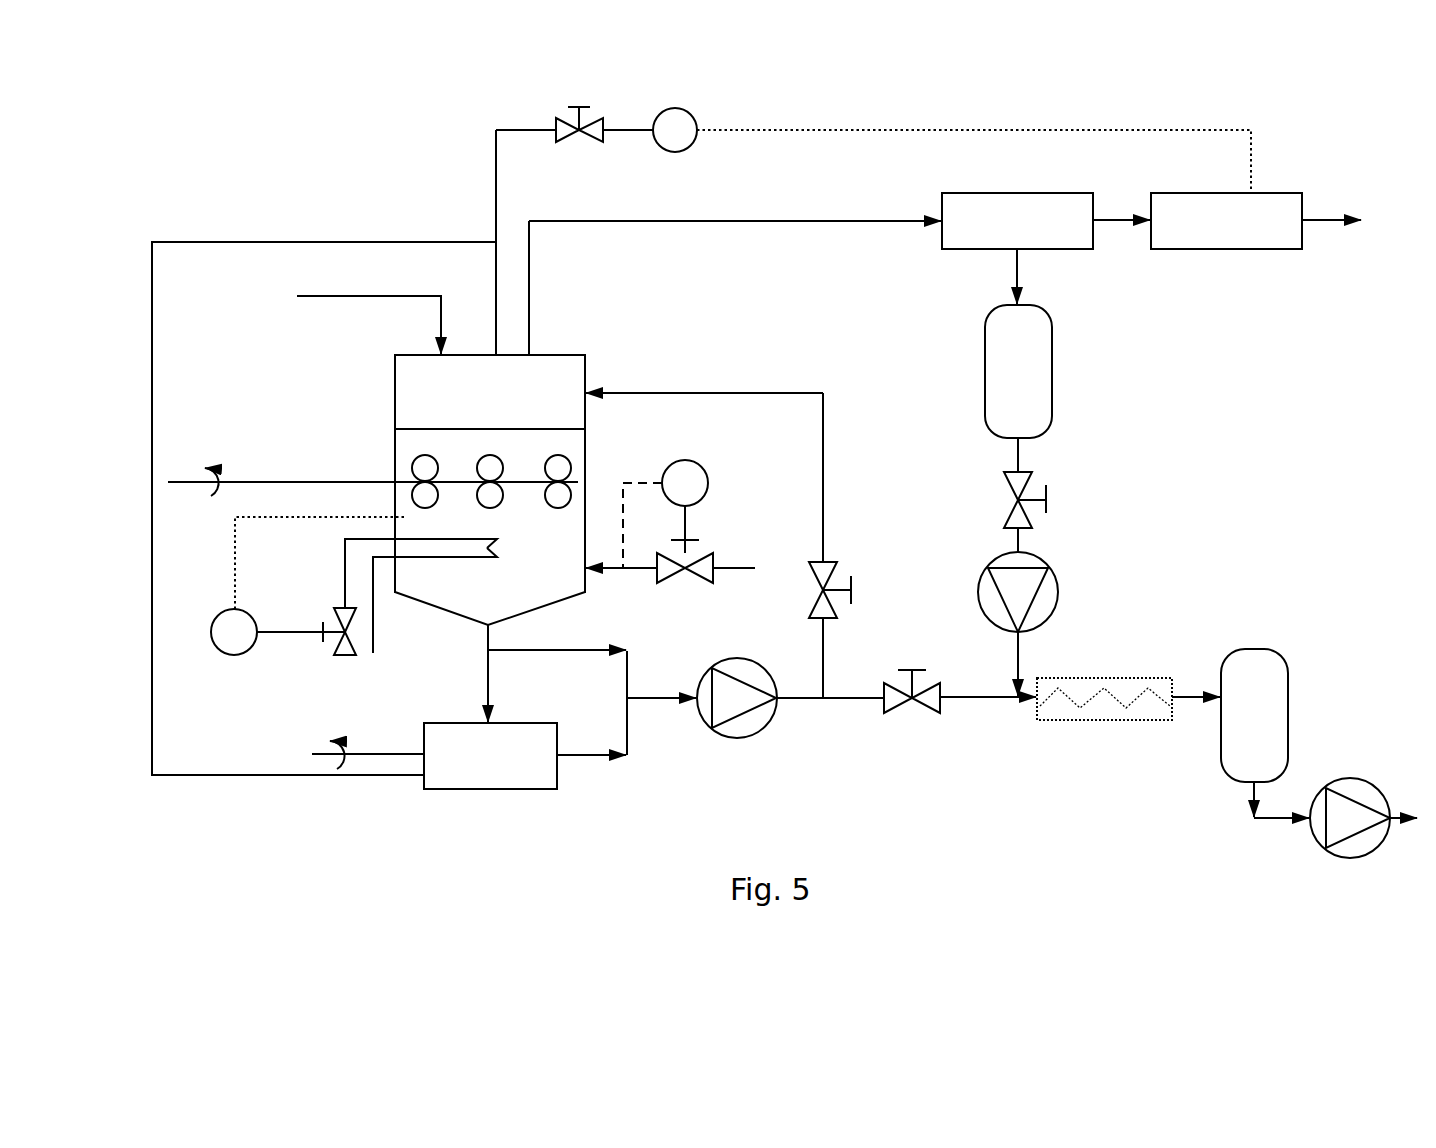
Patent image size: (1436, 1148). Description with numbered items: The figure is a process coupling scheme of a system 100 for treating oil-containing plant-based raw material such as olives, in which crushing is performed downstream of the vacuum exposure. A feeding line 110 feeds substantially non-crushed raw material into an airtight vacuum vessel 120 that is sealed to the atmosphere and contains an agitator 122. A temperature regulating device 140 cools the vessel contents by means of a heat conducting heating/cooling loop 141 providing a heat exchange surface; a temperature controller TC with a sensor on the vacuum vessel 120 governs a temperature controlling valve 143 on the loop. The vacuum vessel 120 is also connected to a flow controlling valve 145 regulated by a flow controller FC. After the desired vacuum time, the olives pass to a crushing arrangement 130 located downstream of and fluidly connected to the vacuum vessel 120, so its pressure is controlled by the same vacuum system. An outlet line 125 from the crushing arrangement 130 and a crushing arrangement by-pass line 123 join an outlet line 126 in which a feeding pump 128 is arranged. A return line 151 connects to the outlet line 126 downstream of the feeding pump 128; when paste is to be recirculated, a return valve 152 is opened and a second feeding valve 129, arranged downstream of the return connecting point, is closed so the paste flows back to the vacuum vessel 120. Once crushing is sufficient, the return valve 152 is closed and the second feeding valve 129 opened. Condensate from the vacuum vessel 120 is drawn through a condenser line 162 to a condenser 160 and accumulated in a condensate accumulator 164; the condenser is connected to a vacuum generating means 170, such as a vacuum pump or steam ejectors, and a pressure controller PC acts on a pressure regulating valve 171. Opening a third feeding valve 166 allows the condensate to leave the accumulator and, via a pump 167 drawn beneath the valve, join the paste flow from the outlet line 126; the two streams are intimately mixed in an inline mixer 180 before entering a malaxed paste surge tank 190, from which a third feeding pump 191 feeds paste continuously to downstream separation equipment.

The system 100 is at (192, 204).
The feeding line 110 is at (332, 297).
The vacuum vessel 120 is at (394, 380).
The agitator 122 is at (574, 456).
The crushing arrangement by-pass line 123 is at (548, 651).
The outlet line 125 is at (585, 758).
The outlet line 126 is at (648, 696).
The feeding pump 128 is at (730, 736).
The second feeding valve 129 is at (930, 712).
The crushing arrangement 130 is at (434, 707).
The temperature regulating device 140 is at (446, 562).
The heating/cooling loop 141 is at (347, 568).
The temperature controlling valve 143 is at (345, 656).
The flow controlling valve 145 is at (705, 556).
The return line 151 is at (824, 445).
The return valve 152 is at (824, 565).
The condenser 160 is at (1046, 248).
The condenser line 162 is at (818, 222).
The condensate accumulator 164 is at (1052, 368).
The third feeding valve 166 is at (1046, 488).
The pump 167 is at (1048, 568).
The vacuum generating means 170 is at (1256, 221).
The pressure regulating valve 171 is at (603, 142).
The inline mixer 180 is at (1075, 678).
The malaxed paste surge tank 190 is at (1243, 650).
The third feeding pump 191 is at (1338, 782).